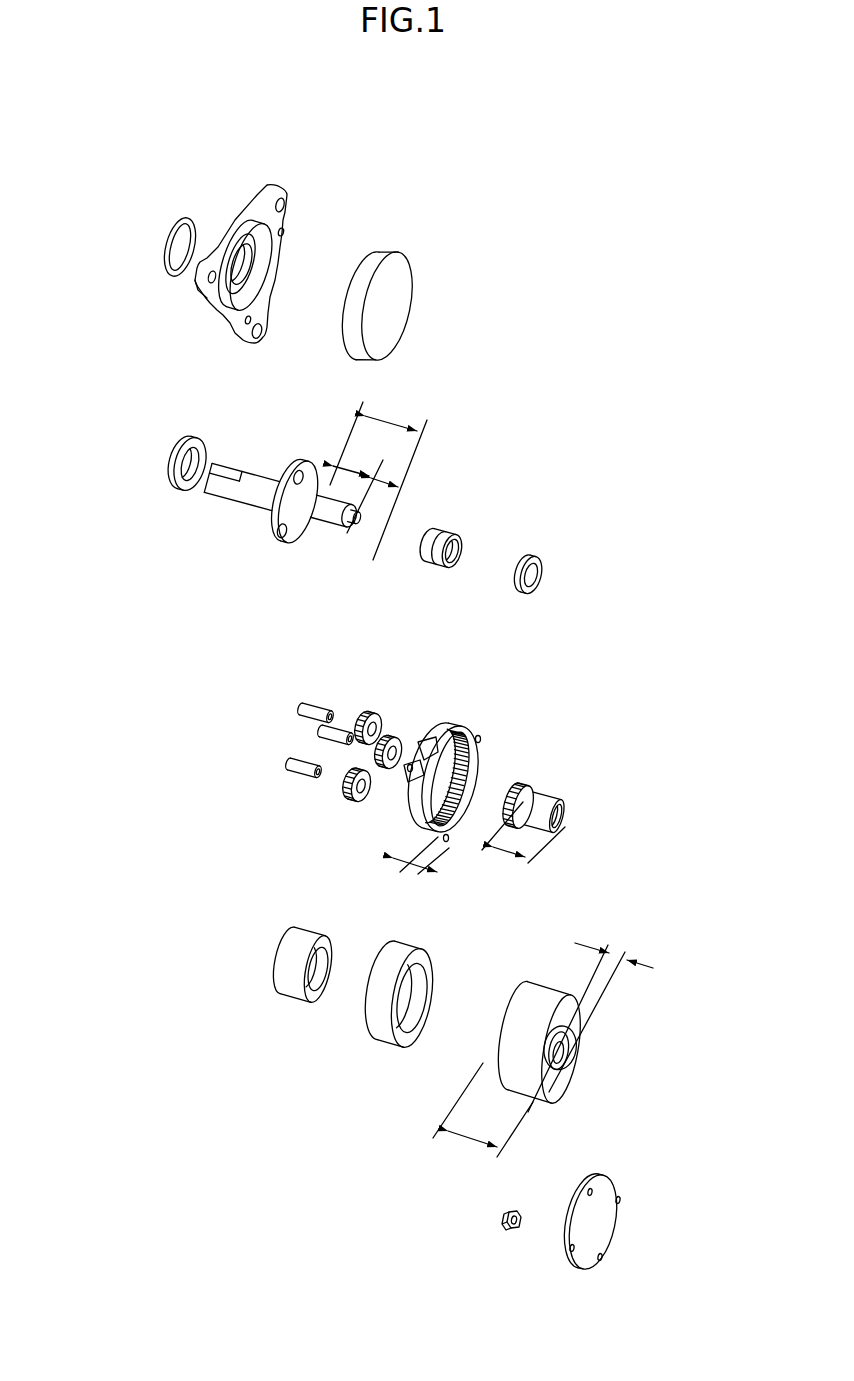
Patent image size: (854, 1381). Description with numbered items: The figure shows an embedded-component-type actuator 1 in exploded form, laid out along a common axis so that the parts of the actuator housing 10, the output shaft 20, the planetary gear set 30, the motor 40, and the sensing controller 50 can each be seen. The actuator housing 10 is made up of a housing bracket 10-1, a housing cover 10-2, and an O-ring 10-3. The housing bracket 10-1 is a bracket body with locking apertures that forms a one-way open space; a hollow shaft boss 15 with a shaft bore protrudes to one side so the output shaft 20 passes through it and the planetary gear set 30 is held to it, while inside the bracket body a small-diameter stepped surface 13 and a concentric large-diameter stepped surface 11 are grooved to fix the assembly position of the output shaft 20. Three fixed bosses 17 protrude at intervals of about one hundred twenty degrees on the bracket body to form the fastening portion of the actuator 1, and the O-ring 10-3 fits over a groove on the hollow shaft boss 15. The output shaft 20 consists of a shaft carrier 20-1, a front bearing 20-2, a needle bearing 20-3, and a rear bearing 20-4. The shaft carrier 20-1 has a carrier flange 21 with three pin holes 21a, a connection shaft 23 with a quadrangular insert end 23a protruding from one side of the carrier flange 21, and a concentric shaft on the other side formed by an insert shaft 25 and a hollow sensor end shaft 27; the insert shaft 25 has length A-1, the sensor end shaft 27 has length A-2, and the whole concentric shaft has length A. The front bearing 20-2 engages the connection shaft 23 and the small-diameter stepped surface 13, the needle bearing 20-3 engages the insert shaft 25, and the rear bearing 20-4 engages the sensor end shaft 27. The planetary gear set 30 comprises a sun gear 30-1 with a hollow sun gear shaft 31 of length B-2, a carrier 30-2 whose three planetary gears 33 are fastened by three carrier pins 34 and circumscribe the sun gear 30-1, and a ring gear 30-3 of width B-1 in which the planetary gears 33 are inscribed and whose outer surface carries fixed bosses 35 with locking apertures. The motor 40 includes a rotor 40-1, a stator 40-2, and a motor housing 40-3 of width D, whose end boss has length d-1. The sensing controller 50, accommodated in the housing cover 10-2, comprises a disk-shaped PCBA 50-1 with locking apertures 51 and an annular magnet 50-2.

The actuator 1 is at (96, 712).
The actuator housing 10 is at (392, 198).
The housing bracket 10-1 is at (283, 268).
The housing cover 10-2 is at (402, 303).
The O-ring 10-3 is at (166, 237).
The large-diameter stepped surface 11 is at (264, 222).
The small-diameter stepped surface 13 is at (243, 240).
The hollow shaft boss 15 is at (212, 230).
The fixed bosses 17 is at (285, 193).
The output shaft 20 is at (500, 490).
The shaft carrier 20-1 is at (323, 627).
The front bearing 20-2 is at (170, 458).
The needle bearing 20-3 is at (440, 560).
The rear bearing 20-4 is at (541, 572).
The carrier flange 21 is at (270, 523).
The pin holes 21a is at (293, 473).
The connection shaft 23 is at (253, 497).
The insert end 23a is at (217, 485).
The insert shaft 25 is at (337, 517).
The sensor end shaft 27 is at (350, 527).
The length of the concentric shaft A is at (378, 476).
The length of the insert shaft A-1 is at (358, 486).
The length of the sensor end shaft A-2 is at (408, 474).
The planetary gear set 30 is at (515, 735).
The sun gear 30-1 is at (515, 800).
The carrier 30-2 is at (238, 823).
The ring gear 30-3 is at (457, 722).
The sun gear shaft 31 is at (543, 807).
The planetary gears 33 is at (347, 790).
The carrier pins 34 is at (300, 768).
The fixed bosses 35 is at (480, 736).
The width of the ring gear B-1 is at (416, 868).
The length of the sun gear shaft B-2 is at (523, 844).
The motor 40 is at (540, 960).
The rotor 40-1 is at (283, 977).
The stator 40-2 is at (372, 1032).
The motor housing 40-3 is at (515, 1022).
The width of the motor housing D is at (483, 1116).
The length of the end boss d-1 is at (590, 1016).
The sensing controller 50 is at (607, 1143).
The PCBA 50-1 is at (607, 1215).
The magnet 50-2 is at (505, 1217).
The locking apertures 51 is at (602, 1257).